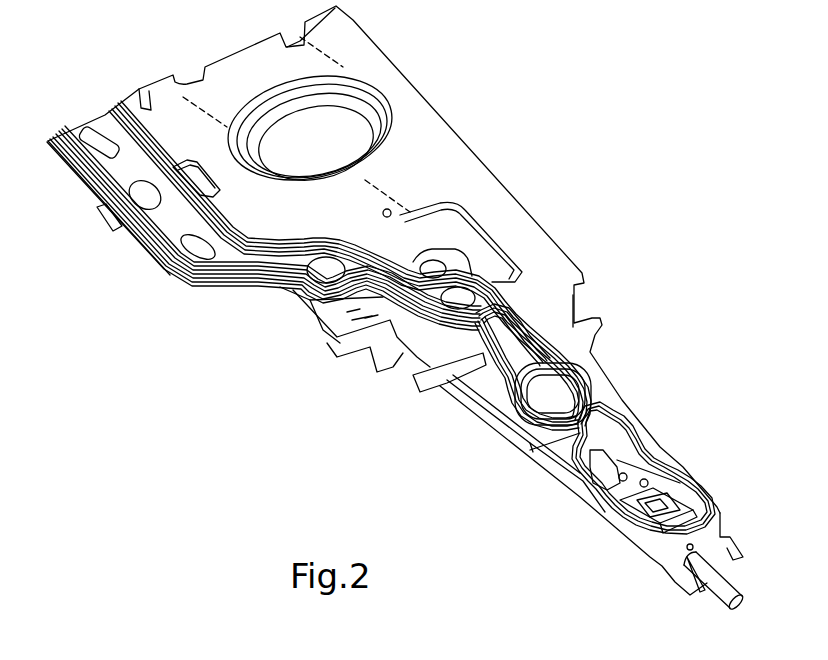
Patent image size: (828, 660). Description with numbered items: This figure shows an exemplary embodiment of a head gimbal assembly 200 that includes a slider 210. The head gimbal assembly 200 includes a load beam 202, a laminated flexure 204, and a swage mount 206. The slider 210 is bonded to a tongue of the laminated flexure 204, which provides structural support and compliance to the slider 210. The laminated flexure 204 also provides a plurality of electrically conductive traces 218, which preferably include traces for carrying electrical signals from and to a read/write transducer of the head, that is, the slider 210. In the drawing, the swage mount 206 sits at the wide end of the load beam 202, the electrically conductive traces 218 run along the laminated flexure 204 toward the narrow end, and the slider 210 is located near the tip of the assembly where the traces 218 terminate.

The head gimbal assembly 200 is at (560, 175).
The load beam 202 is at (473, 412).
The laminated flexure 204 is at (660, 570).
The swage mount 206 is at (367, 88).
The slider 210 is at (700, 500).
The electrically conductive traces 218 is at (237, 265).